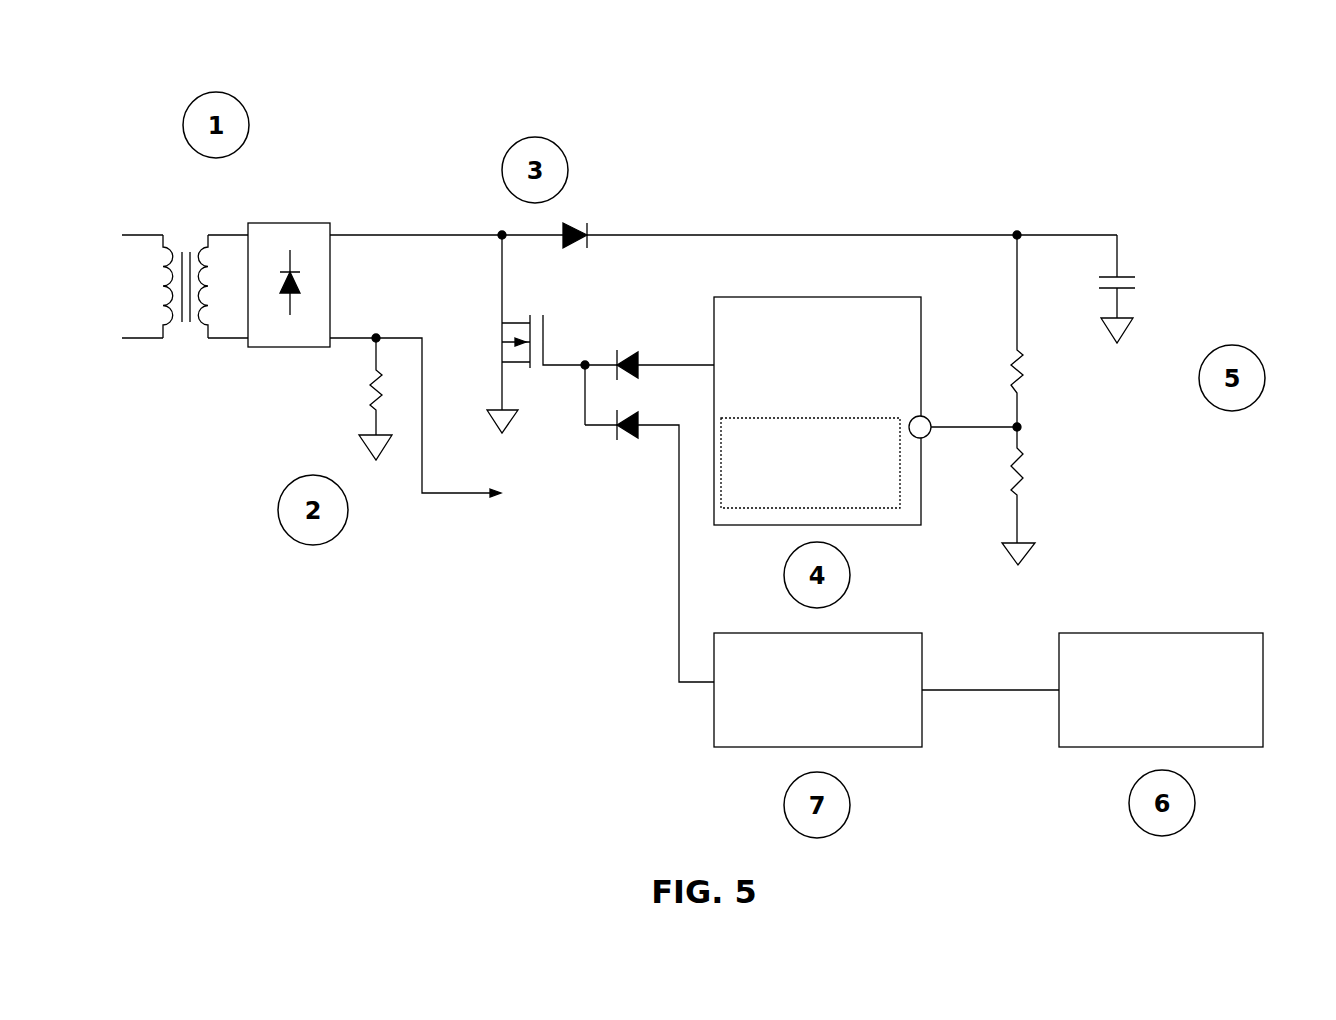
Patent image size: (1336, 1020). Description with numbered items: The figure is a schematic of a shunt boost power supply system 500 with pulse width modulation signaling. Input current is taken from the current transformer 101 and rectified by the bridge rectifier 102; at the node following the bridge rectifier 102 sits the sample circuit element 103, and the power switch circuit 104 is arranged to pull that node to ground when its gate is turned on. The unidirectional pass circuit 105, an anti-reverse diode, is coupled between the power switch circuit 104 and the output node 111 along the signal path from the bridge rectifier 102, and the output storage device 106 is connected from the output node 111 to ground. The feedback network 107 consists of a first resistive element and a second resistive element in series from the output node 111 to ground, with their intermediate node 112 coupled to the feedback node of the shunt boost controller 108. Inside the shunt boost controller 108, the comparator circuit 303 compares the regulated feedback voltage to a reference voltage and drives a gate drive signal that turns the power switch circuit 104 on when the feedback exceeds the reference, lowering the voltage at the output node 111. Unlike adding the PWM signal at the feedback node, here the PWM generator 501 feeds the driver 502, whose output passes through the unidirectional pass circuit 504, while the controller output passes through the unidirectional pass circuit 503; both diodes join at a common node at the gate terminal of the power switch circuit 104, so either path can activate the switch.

The shunt boost power supply system 500 is at (1010, 64).
The current transformer 101 is at (178, 327).
The bridge rectifier 102 is at (330, 223).
The sample circuit element 103 is at (370, 400).
The power switch circuit 104 is at (540, 327).
The unidirectional pass circuit 105 is at (585, 222).
The output storage device 106 is at (1118, 275).
The feedback network 107 is at (1140, 358).
The shunt boost controller 108 is at (825, 297).
The output node 111 is at (1017, 235).
The intermediate node 112 is at (1020, 432).
The comparator circuit 303 is at (810, 463).
The PWM generator 501 is at (1200, 633).
The driver 502 is at (870, 633).
The unidirectional pass circuit 503 is at (617, 350).
The unidirectional pass circuit 504 is at (617, 437).